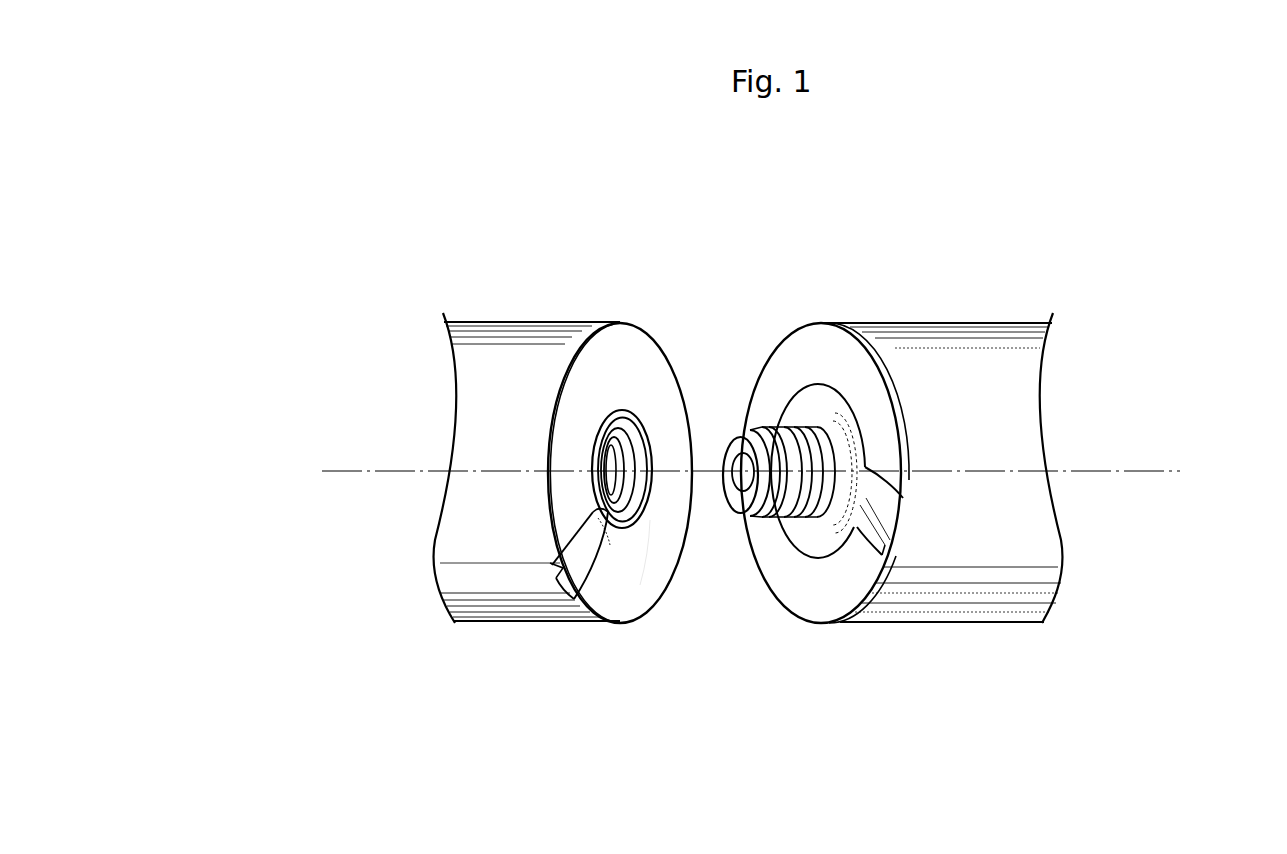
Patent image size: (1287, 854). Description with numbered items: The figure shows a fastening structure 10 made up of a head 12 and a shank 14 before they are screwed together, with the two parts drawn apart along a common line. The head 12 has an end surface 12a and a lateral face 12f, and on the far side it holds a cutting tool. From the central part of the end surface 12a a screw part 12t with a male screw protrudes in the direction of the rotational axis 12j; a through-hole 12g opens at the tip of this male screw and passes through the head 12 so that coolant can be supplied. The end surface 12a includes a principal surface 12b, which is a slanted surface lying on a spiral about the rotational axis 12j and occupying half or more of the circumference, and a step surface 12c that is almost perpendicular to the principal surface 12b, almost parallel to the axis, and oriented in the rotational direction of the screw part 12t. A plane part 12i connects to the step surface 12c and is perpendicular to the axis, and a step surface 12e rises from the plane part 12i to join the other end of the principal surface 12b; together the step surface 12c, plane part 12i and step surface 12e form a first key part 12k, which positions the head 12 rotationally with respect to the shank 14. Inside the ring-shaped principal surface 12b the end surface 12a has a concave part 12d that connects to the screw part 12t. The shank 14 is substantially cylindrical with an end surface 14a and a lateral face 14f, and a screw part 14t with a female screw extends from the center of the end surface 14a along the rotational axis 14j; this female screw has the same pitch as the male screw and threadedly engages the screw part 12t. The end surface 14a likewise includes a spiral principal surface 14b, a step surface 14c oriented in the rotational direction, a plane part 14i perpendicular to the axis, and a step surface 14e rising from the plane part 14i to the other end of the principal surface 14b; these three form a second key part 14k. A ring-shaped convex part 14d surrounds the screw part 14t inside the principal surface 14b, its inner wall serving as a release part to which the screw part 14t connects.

The fastening structure 10 is at (1130, 757).
The head 12 is at (829, 292).
The end surface 12a is at (752, 590).
The principal surface 12b is at (822, 583).
The step surface 12c is at (883, 556).
The concave part 12d is at (815, 400).
The step surface 12e is at (907, 505).
The lateral face 12f is at (993, 328).
The through-hole 12g is at (742, 500).
The plane part 12i is at (888, 515).
The rotational axis 12j is at (1155, 470).
The first key part 12k is at (1152, 492).
The screw part 12t is at (757, 427).
The shank 14 is at (411, 299).
The end surface 14a is at (621, 314).
The principal surface 14b is at (635, 380).
The step surface 14c is at (552, 565).
The convex part 14d is at (638, 515).
The step surface 14e is at (575, 600).
The lateral face 14f is at (505, 330).
The plane part 14i is at (572, 572).
The rotational axis 14j is at (352, 470).
The second key part 14k is at (612, 703).
The screw part 14t is at (640, 457).